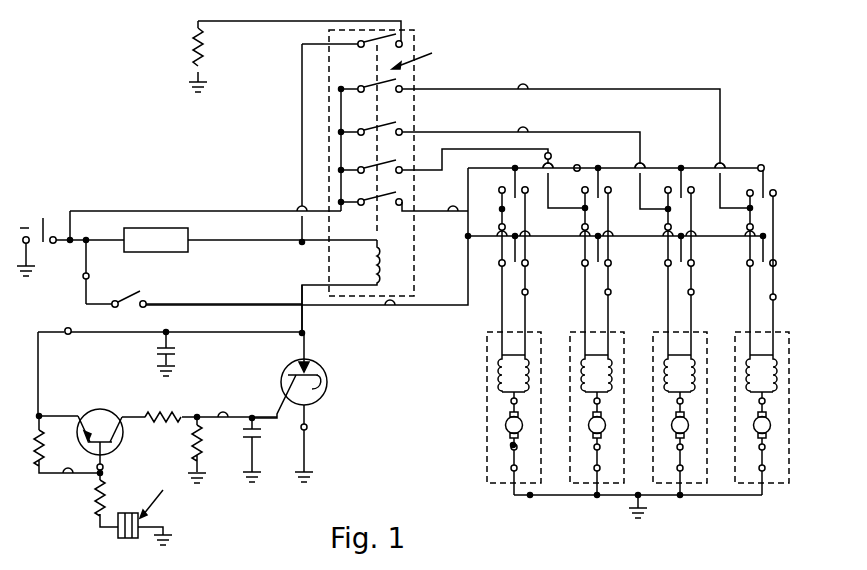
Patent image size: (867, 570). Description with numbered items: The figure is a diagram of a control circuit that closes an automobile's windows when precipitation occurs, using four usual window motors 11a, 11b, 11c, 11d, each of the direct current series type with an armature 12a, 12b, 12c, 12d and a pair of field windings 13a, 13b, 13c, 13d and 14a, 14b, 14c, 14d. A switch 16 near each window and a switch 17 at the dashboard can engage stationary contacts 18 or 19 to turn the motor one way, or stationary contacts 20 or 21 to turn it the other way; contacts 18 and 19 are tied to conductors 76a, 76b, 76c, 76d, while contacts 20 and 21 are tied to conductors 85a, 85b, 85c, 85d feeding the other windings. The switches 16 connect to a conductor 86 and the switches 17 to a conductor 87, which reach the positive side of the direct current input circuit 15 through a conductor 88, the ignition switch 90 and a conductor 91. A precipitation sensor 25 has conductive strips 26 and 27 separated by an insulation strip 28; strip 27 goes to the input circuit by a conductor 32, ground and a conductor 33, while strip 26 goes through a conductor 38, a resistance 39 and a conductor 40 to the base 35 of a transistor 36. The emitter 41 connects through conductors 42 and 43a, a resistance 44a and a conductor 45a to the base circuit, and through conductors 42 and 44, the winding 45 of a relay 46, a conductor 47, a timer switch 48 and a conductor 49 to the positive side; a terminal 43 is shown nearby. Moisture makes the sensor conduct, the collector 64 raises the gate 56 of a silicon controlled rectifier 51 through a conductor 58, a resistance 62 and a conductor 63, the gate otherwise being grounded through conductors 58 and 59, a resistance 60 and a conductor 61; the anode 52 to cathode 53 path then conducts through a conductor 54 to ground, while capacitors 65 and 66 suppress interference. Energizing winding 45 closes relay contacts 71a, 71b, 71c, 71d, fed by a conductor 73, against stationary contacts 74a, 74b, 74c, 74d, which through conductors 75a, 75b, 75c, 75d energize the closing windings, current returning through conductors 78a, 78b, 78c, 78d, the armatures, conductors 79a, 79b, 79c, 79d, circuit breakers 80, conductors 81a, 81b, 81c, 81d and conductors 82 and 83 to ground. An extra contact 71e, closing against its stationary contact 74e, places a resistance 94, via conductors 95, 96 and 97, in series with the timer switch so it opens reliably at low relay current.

The window motor 11a is at (487, 483).
The window motor 11b is at (584, 485).
The window motor 11c is at (662, 483).
The window motor 11d is at (733, 483).
The armature 12a is at (505, 425).
The armature 12b is at (589, 425).
The armature 12c is at (672, 425).
The armature 12d is at (754, 425).
The field winding 13a is at (500, 360).
The field winding 13b is at (583, 372).
The field winding 13c is at (667, 377).
The field winding 13d is at (748, 364).
The field winding 14a is at (529, 360).
The field winding 14b is at (612, 360).
The field winding 14c is at (693, 387).
The field winding 14d is at (777, 387).
The direct current input circuit 15 is at (52, 234).
The switch 16 is at (528, 242).
The switch 17 is at (511, 165).
The stationary contact 18 is at (498, 264).
The stationary contact 19 is at (498, 187).
The stationary contact 20 is at (530, 265).
The stationary contact 21 is at (532, 190).
The precipitation sensor 25 is at (145, 508).
The conductive strip 26 is at (118, 533).
The conductive strip 27 is at (140, 537).
The insulation strip 28 is at (128, 538).
The conductor 32 is at (175, 530).
The conductor 33 is at (30, 262).
The base 35 is at (115, 445).
The transistor 36 is at (78, 445).
The conductor 38 is at (98, 521).
The resistance 39 is at (92, 496).
The conductor 40 is at (103, 470).
The emitter 41 is at (104, 409).
The conductor 42 is at (68, 414).
The terminal 43 is at (67, 336).
The conductor 43a is at (38, 418).
The conductor 44 is at (300, 319).
The resistance 44a is at (34, 456).
The relay winding 45 is at (384, 275).
The conductor 45a is at (68, 476).
The relay 46 is at (422, 54).
The conductor 47 is at (278, 242).
The timer switch 48 is at (189, 239).
The conductor 49 is at (74, 240).
The silicon controlled rectifier 51 is at (292, 364).
The anode 52 is at (312, 368).
The cathode 53 is at (322, 388).
The conductor 54 is at (306, 428).
The gate 56 is at (282, 404).
The conductor 58 is at (223, 413).
The conductor 59 is at (192, 428).
The resistance 60 is at (193, 453).
The conductor 61 is at (203, 462).
The resistance 62 is at (197, 413).
The conductor 63 is at (148, 415).
The collector 64 is at (120, 413).
The capacitor 65 is at (253, 445).
The capacitor 66 is at (157, 350).
The relay contact 71a is at (376, 198).
The relay contact 71b is at (376, 163).
The relay contact 71c is at (376, 122).
The relay contact 71d is at (355, 85).
The relay contact 71e is at (358, 50).
The conductor 73 is at (280, 209).
The stationary contact 74a is at (410, 200).
The stationary contact 74b is at (405, 169).
The stationary contact 74c is at (405, 130).
The stationary contact 74d is at (405, 86).
The relay contact 74e is at (405, 41).
The conductor 75a is at (454, 214).
The conductor 75b is at (552, 156).
The conductor 75c is at (523, 132).
The conductor 75d is at (523, 89).
The conductor 76a is at (498, 228).
The conductor 76b is at (582, 228).
The conductor 76c is at (665, 228).
The conductor 76d is at (747, 228).
The conductor 78a is at (511, 403).
The conductor 78b is at (600, 402).
The conductor 78c is at (682, 402).
The conductor 78d is at (764, 402).
The conductor 79a is at (518, 449).
The conductor 79b is at (600, 449).
The conductor 79c is at (682, 449).
The conductor 79d is at (764, 449).
The circuit breaker 80 is at (510, 451).
The conductor 81a is at (512, 472).
The conductor 81b is at (600, 468).
The conductor 81c is at (682, 468).
The conductor 81d is at (764, 468).
The conductor 82 is at (530, 499).
The conductor 83 is at (636, 500).
The conductor 85a is at (529, 294).
The conductor 85b is at (612, 294).
The conductor 85c is at (695, 294).
The conductor 85d is at (777, 299).
The conductor 86 is at (467, 238).
The conductor 87 is at (582, 166).
The conductor 88 is at (391, 308).
The ignition switch 90 is at (150, 278).
The conductor 91 is at (89, 278).
The resistance 94 is at (192, 45).
The conductor 95 is at (194, 78).
The conductor 96 is at (230, 19).
The conductor 97 is at (300, 126).